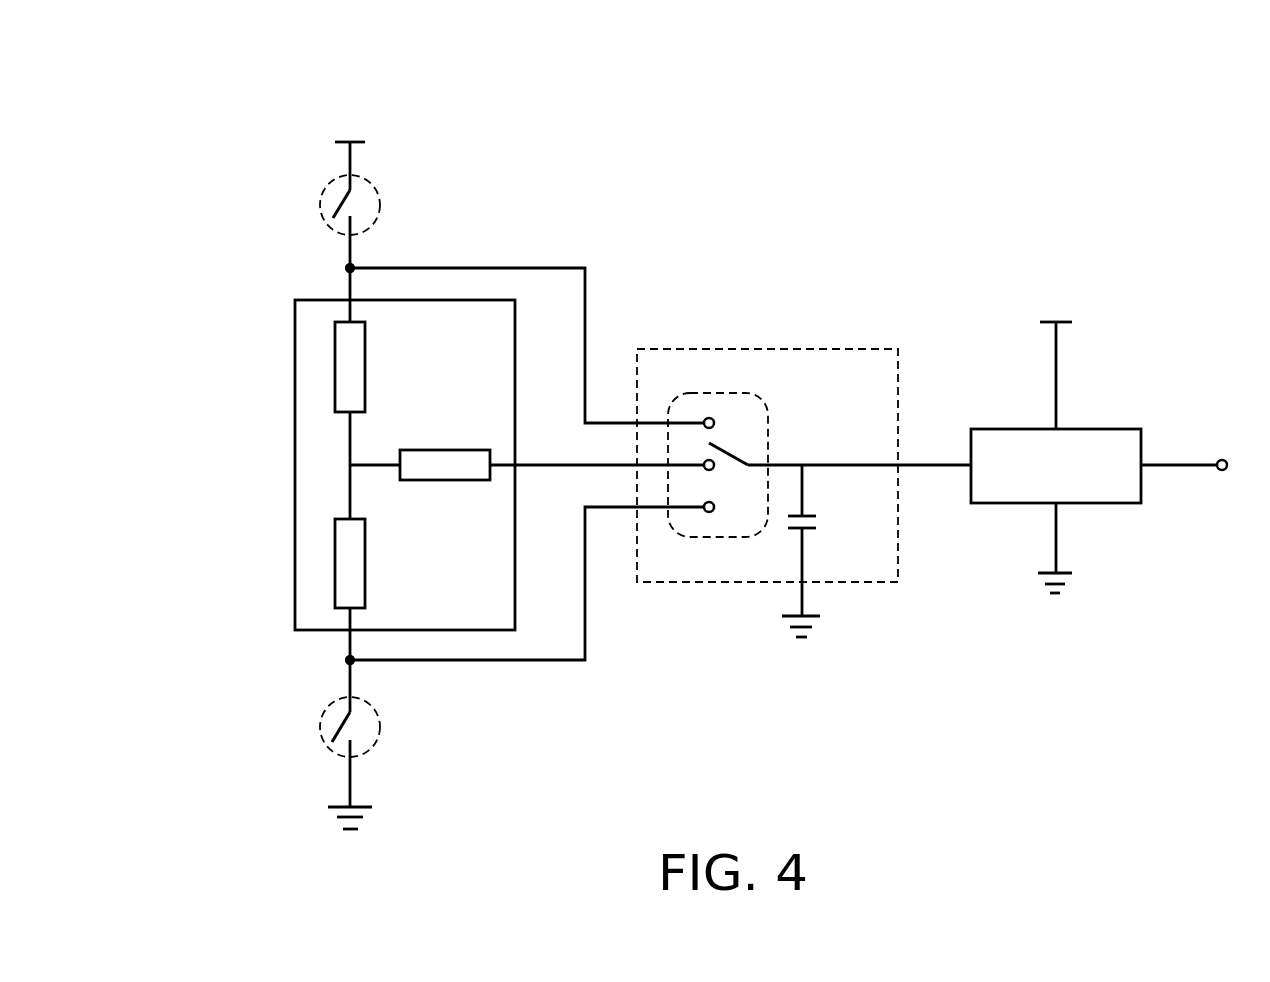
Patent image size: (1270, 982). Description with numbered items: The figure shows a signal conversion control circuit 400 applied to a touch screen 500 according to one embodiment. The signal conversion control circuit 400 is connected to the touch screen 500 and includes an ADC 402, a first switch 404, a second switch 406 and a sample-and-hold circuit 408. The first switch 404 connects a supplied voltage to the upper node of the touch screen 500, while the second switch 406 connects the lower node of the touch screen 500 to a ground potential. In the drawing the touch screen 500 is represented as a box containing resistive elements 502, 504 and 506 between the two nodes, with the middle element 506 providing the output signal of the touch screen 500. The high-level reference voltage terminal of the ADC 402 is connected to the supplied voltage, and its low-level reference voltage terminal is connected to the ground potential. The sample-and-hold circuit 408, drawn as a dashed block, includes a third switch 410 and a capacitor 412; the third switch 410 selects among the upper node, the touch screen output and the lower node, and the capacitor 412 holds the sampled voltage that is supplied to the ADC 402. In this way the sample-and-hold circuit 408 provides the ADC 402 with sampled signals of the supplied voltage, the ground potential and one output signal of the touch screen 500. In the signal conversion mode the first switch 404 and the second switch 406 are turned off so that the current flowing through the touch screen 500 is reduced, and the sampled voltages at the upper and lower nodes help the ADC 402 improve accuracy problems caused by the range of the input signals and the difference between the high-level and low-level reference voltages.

The signal conversion control circuit 400 is at (917, 124).
The ADC 402 is at (1112, 429).
The first switch 404 is at (381, 205).
The second switch 406 is at (381, 727).
The sample-and-hold circuit 408 is at (768, 349).
The third switch 410 is at (770, 420).
The capacitor 412 is at (824, 540).
The touch screen 500 is at (360, 465).
The resistor 502 is at (366, 343).
The resistor 504 is at (366, 557).
The resistor 506 is at (446, 450).